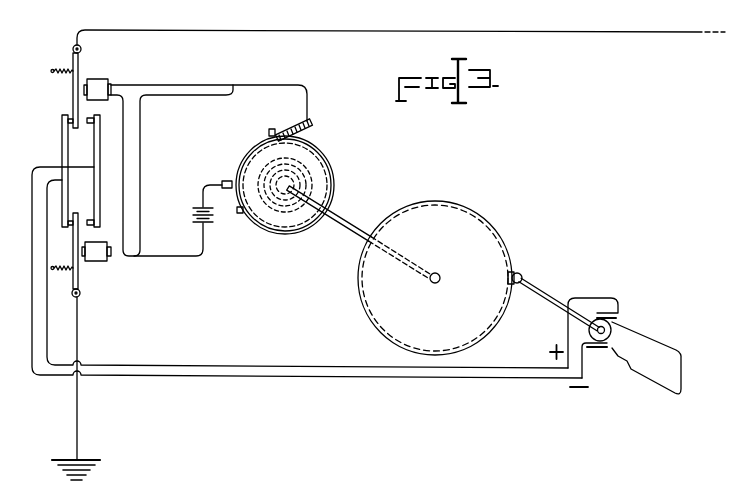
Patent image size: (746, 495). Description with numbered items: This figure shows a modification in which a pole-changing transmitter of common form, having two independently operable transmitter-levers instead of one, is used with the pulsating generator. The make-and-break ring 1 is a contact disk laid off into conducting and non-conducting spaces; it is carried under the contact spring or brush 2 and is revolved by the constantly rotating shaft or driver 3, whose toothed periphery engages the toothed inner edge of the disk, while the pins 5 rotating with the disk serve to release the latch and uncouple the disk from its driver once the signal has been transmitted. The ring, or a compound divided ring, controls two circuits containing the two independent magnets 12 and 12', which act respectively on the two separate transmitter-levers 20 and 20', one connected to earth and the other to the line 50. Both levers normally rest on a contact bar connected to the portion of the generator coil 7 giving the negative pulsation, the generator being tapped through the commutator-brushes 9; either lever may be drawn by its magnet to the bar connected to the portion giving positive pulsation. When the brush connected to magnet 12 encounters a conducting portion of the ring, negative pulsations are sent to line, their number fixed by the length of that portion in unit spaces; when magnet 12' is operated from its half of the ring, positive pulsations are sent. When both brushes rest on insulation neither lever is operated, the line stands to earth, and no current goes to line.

The line 50 is at (401, 28).
The transmitter-lever 20 is at (64, 86).
The transmitter-lever 20' is at (64, 255).
The magnet 12 is at (97, 80).
The magnet 12' is at (96, 262).
The make-and-break ring 1 is at (318, 172).
The contact spring or brush 2 is at (294, 131).
The rotating shaft or driver 3 is at (360, 227).
The pins 5 is at (268, 131).
The generator coil 7 is at (683, 373).
The commutator-brushes 9 is at (616, 314).